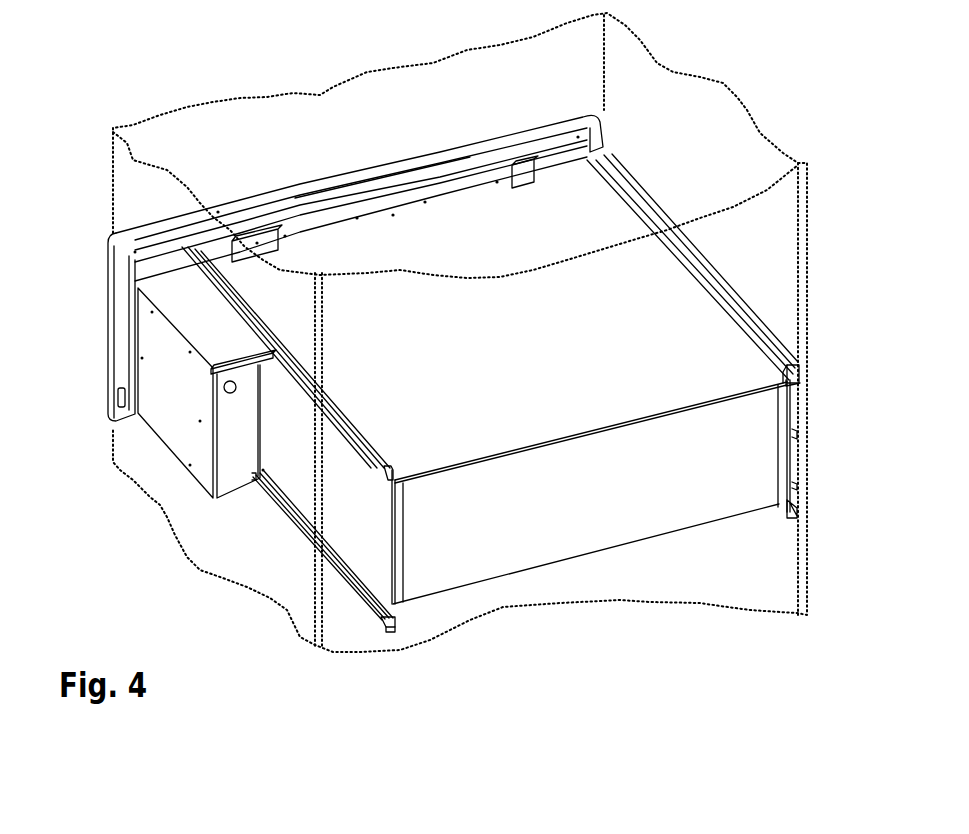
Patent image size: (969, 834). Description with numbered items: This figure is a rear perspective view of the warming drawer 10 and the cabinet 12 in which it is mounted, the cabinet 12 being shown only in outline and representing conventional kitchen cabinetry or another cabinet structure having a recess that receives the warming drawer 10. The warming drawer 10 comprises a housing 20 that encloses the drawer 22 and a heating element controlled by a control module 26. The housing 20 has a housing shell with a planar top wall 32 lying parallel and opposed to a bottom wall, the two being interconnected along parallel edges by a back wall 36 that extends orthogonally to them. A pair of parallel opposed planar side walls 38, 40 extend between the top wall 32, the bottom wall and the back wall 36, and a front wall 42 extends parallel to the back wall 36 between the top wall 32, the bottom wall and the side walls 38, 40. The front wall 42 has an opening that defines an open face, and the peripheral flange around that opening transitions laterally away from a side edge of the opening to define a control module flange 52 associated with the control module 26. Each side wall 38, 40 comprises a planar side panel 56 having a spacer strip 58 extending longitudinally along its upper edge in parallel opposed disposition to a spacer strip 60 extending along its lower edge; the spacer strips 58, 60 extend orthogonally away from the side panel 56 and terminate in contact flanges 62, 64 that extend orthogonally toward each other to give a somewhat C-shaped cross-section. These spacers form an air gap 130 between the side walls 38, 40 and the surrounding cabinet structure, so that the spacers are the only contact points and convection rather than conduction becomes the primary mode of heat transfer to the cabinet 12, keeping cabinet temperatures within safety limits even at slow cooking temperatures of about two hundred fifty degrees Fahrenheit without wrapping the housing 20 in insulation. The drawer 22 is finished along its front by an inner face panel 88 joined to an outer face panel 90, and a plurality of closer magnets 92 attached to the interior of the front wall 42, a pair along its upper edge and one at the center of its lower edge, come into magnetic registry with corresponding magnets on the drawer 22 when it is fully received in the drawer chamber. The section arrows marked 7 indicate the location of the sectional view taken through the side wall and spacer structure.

The warming drawer 10 is at (772, 308).
The cabinet 12 is at (752, 116).
The housing 20 is at (468, 441).
The drawer 22 is at (433, 153).
The control module 26 is at (187, 443).
The top wall 32 is at (718, 357).
The back wall 36 is at (557, 527).
The side wall 38 is at (284, 484).
The side wall 40 is at (795, 487).
The front wall 42 is at (373, 210).
The control module flange 52 is at (152, 262).
The side panel 56 is at (370, 562).
The spacer strip 58 is at (308, 520).
The spacer strip 60 is at (390, 627).
The contact flange 62 is at (336, 530).
The contact flange 64 is at (386, 618).
The inner face panel 88 is at (466, 162).
The outer face panel 90 is at (217, 210).
The closer magnet 92 is at (261, 247).
The air gap 130 is at (798, 433).
The section line 7 is at (735, 273).